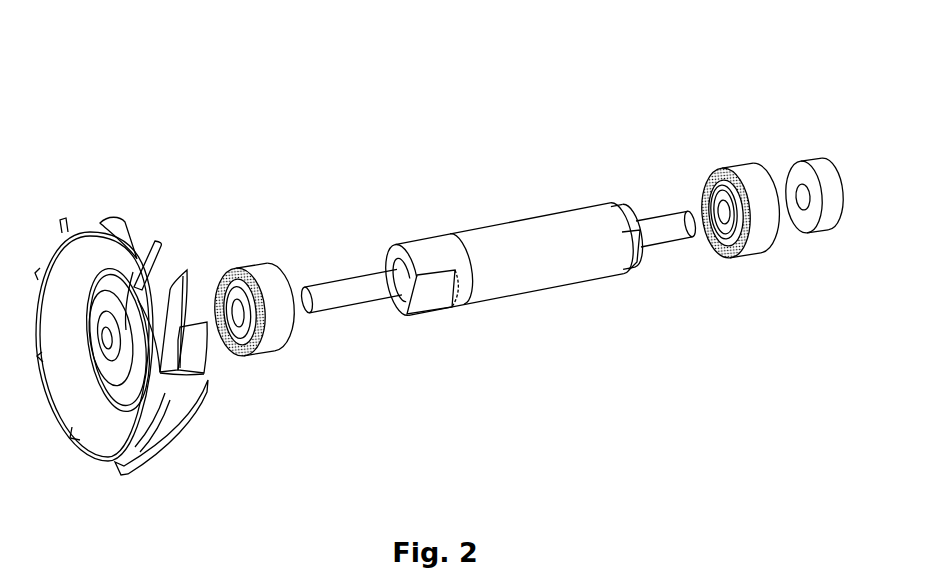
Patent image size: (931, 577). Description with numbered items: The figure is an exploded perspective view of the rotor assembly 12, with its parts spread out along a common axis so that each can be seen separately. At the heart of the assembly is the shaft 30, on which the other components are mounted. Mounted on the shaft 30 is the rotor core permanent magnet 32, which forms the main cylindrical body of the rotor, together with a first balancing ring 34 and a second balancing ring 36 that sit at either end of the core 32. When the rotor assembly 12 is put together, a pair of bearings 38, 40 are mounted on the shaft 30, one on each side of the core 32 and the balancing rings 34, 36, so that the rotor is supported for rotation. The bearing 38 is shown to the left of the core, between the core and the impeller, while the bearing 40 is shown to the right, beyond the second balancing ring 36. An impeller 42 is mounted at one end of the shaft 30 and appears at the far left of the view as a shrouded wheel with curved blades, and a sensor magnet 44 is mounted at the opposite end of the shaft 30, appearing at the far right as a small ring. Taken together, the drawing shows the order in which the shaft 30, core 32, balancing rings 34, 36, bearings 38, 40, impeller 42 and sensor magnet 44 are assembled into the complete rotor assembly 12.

The rotor assembly 12 is at (253, 127).
The impeller 42 is at (117, 222).
The bearing 38 is at (268, 333).
The shaft 30 is at (353, 290).
The rotor core permanent magnet 32 is at (518, 262).
The first balancing ring 34 is at (423, 287).
The second balancing ring 36 is at (614, 216).
The bearing 40 is at (752, 178).
The sensor magnet 44 is at (823, 217).